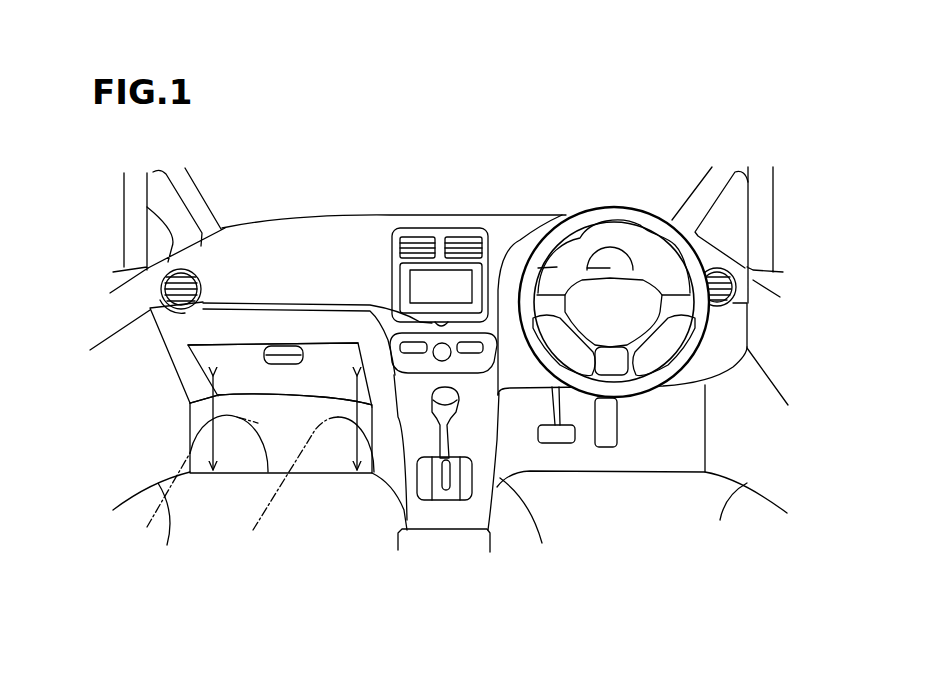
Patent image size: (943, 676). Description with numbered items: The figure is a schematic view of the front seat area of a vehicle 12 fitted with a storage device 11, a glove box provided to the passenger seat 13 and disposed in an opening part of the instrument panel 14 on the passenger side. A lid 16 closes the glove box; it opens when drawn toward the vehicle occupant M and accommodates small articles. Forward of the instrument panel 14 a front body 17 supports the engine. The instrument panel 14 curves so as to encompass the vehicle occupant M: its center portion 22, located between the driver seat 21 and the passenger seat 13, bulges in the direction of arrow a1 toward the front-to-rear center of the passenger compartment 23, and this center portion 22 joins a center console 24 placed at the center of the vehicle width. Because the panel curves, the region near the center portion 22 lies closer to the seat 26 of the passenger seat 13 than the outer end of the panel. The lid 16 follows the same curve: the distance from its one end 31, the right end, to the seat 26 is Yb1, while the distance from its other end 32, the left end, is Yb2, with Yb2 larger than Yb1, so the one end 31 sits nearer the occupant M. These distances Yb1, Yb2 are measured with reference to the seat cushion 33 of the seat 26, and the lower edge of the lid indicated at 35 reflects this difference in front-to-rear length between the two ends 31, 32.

The storage device 11 is at (230, 348).
The vehicle 12 is at (580, 153).
The passenger seat 13 is at (130, 416).
The instrument panel 14 is at (510, 220).
The lid 16 is at (322, 337).
The front body 17 is at (661, 176).
The driver seat 21 is at (595, 528).
The center portion 22 is at (450, 320).
The passenger compartment 23 is at (660, 573).
The center console 24 is at (460, 550).
The seat 26 is at (116, 502).
The one end of the lid 31 is at (382, 372).
The other end of the lid 32 is at (178, 372).
The seat cushion 33 is at (308, 520).
The glove box lid lower edge 35 is at (285, 399).
The vehicle occupant M is at (257, 525).
The distance from one end of lid to seat Yb1 is at (331, 423).
The distance from other end of lid to seat Yb2 is at (232, 423).
The arrow a1 is at (423, 385).